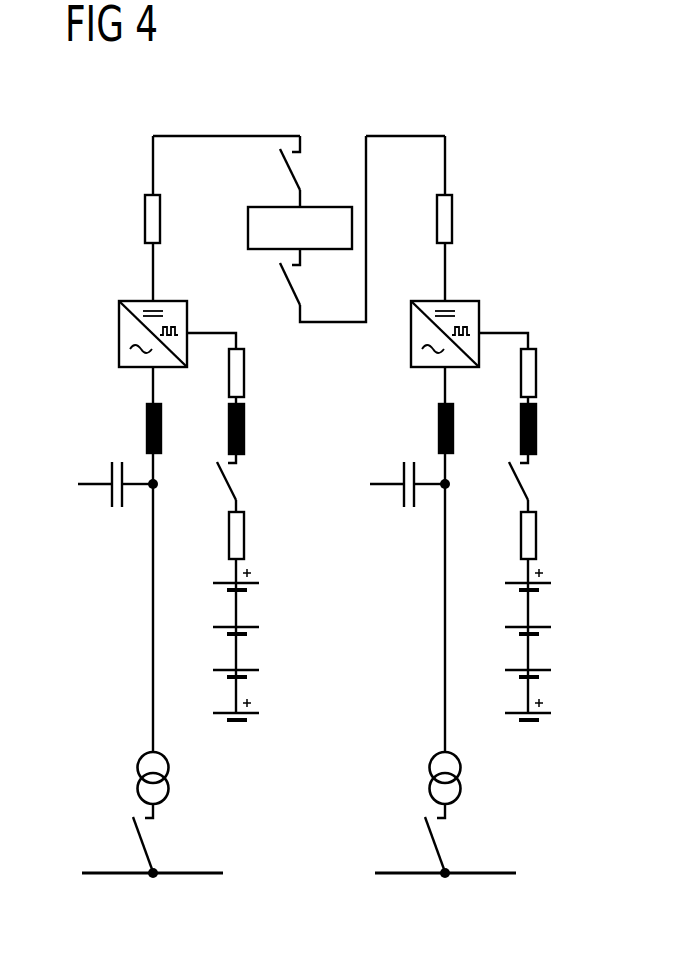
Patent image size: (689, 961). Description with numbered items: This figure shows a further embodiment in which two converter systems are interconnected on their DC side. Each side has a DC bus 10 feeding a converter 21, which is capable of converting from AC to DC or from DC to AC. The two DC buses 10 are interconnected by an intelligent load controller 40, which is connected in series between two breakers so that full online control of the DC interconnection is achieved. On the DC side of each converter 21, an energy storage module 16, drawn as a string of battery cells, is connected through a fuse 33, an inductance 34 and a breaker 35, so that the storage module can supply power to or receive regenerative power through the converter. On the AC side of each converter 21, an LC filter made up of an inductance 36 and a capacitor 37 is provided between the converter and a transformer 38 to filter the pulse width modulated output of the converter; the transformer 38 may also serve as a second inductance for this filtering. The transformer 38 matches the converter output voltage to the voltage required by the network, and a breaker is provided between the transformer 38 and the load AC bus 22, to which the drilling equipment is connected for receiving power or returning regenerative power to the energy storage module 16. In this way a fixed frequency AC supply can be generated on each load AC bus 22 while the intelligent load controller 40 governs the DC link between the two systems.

The DC bus 10 is at (224, 135).
The energy storage module 16 is at (216, 668).
The converter 21 is at (126, 284).
The load AC bus 22 is at (195, 872).
The fuse 33 is at (246, 376).
The inductance 34 is at (246, 430).
The breaker 35 is at (237, 492).
The LC filter inductance 36 is at (147, 430).
The LC filter capacitor 37 is at (118, 512).
The transformer 38 is at (137, 767).
The intelligent load controller 40 is at (248, 228).